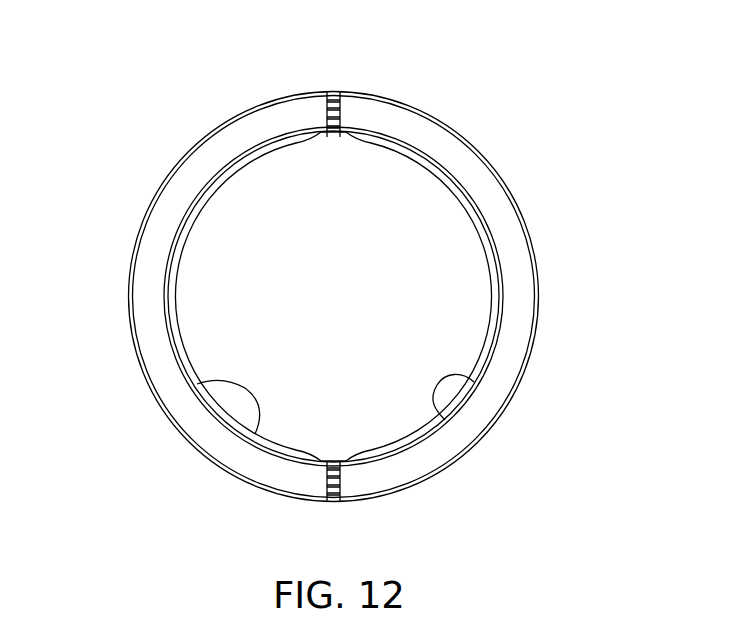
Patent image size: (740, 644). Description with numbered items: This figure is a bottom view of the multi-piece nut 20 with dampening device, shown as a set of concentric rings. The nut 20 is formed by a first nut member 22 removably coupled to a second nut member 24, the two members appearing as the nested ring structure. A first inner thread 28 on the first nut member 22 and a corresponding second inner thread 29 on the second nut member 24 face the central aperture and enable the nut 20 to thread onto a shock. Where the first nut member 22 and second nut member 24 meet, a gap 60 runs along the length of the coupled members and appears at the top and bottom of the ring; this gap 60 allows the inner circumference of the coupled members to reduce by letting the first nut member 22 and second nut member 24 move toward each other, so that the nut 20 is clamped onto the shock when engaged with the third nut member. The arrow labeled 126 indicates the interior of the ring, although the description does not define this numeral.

The multi-piece nut 20 is at (350, 282).
The first nut member 22 is at (521, 239).
The second nut member 24 is at (158, 219).
The first inner thread 28 is at (445, 420).
The second inner thread 29 is at (255, 434).
The gap 60 is at (333, 91).
The interior opening 126 is at (222, 301).